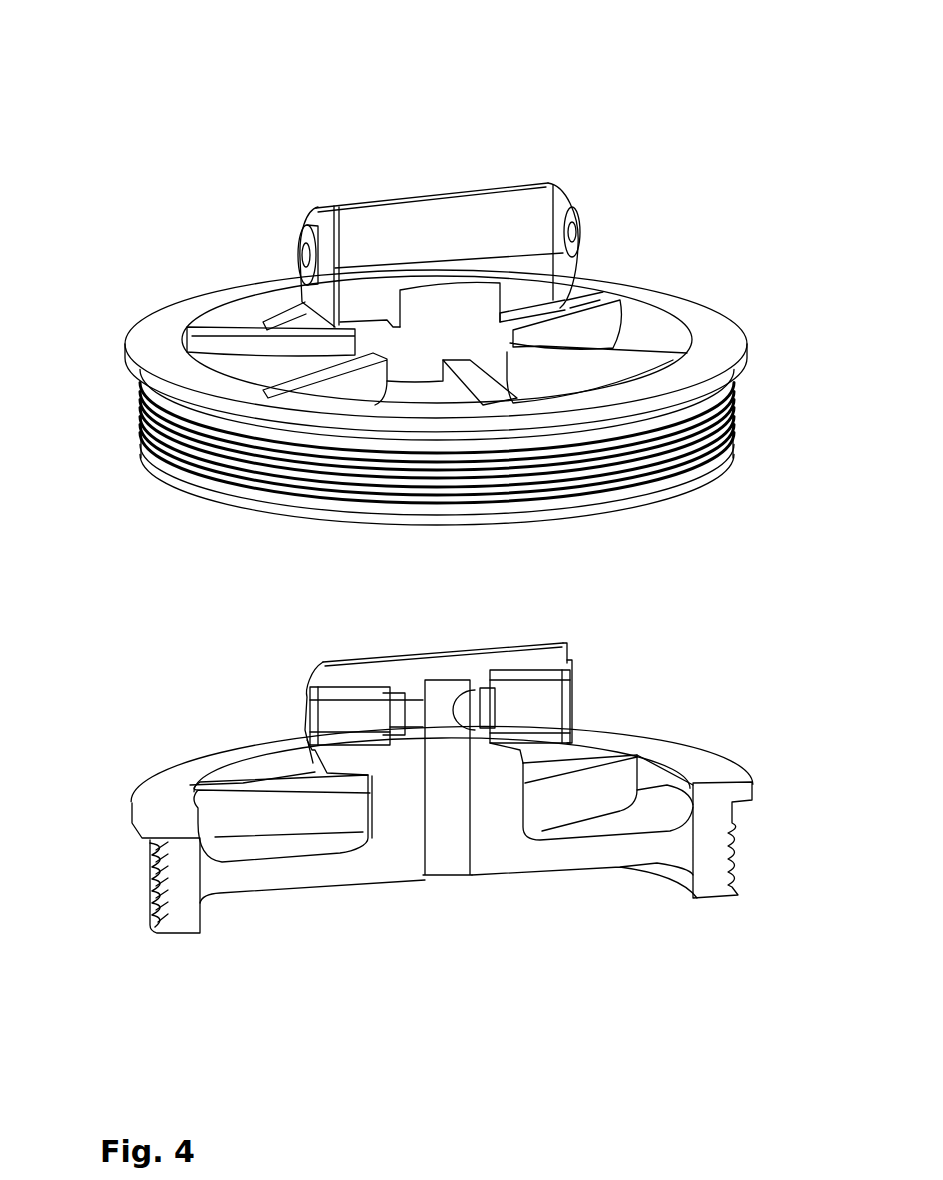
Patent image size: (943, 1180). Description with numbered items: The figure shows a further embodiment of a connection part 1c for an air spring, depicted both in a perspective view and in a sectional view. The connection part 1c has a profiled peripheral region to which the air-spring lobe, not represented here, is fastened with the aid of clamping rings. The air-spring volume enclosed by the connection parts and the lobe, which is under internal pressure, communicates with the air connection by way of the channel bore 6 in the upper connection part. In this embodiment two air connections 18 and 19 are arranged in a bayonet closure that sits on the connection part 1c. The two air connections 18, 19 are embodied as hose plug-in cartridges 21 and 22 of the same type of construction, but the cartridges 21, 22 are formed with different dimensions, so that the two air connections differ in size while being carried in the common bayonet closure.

The connection part 1c is at (435, 262).
The channel bore 6 is at (450, 834).
The air connection 18 is at (272, 233).
The air connection 19 is at (607, 210).
The hose plug-in cartridge 21 is at (322, 717).
The hose plug-in cartridge 22 is at (549, 701).